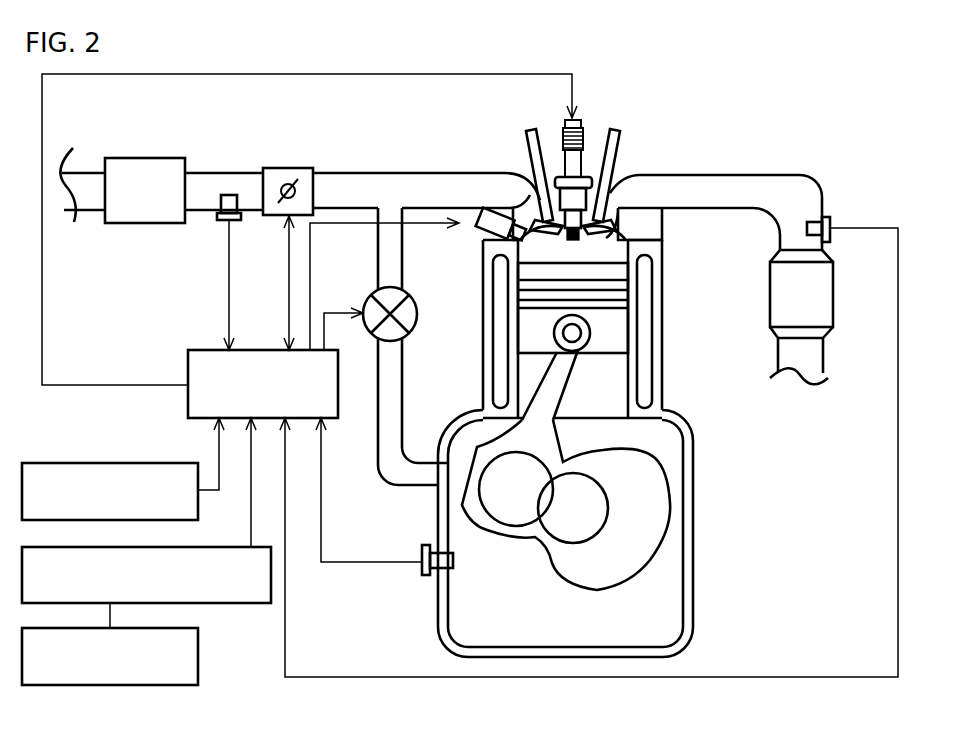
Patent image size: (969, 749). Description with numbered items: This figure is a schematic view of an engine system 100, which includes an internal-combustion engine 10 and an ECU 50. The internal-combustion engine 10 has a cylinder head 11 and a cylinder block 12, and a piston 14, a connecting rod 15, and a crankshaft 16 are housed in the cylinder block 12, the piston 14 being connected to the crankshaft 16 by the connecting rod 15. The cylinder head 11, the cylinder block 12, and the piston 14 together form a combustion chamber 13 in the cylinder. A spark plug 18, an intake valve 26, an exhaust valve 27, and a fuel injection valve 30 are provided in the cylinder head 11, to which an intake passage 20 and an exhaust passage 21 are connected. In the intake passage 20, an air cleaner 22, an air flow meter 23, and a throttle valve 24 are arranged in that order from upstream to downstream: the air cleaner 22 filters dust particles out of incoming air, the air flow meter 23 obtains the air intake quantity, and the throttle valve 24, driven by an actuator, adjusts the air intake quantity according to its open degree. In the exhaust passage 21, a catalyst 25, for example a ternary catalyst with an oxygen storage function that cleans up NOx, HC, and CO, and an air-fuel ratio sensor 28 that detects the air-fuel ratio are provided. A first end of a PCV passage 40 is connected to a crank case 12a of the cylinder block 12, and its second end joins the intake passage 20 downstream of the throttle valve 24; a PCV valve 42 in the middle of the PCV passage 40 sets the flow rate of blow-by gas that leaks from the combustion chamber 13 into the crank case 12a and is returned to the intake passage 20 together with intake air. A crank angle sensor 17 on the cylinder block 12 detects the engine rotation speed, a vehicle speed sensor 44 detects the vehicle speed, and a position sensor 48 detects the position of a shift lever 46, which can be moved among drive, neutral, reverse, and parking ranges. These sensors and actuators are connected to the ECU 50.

The engine system 100 is at (938, 115).
The internal-combustion engine 10 is at (722, 480).
The cylinder head 11 is at (667, 227).
The cylinder block 12 is at (664, 400).
The crank case 12a is at (692, 592).
The combustion chamber 13 is at (632, 258).
The piston 14 is at (530, 338).
The connecting rod 15 is at (545, 392).
The crankshaft 16 is at (498, 506).
The crank angle sensor 17 is at (427, 578).
The spark plug 18 is at (585, 130).
The intake passage 20 is at (218, 172).
The exhaust passage 21 is at (822, 197).
The air cleaner 22 is at (140, 224).
The air flow meter 23 is at (222, 221).
The throttle valve 24 is at (282, 216).
The catalyst 25 is at (833, 292).
The intake valve 26 is at (523, 137).
The exhaust valve 27 is at (618, 130).
The air-fuel ratio sensor 28 is at (832, 238).
The fuel injection valve 30 is at (490, 244).
The positive crankcase ventilation (PCV) passage 40 is at (378, 482).
The PCV valve 42 is at (412, 300).
The vehicle speed sensor 44 is at (70, 463).
The shift lever 46 is at (199, 660).
The position sensor 48 is at (232, 604).
The ECU 50 is at (187, 393).